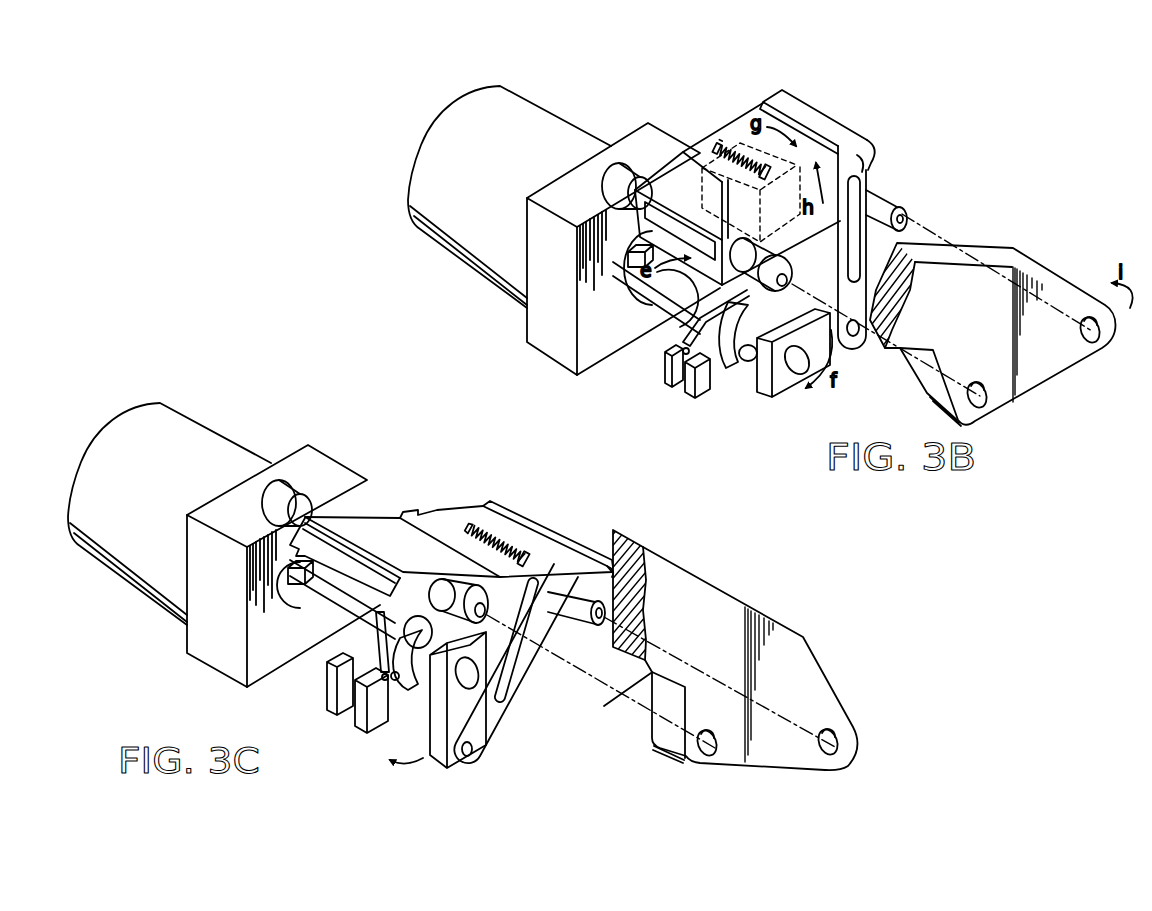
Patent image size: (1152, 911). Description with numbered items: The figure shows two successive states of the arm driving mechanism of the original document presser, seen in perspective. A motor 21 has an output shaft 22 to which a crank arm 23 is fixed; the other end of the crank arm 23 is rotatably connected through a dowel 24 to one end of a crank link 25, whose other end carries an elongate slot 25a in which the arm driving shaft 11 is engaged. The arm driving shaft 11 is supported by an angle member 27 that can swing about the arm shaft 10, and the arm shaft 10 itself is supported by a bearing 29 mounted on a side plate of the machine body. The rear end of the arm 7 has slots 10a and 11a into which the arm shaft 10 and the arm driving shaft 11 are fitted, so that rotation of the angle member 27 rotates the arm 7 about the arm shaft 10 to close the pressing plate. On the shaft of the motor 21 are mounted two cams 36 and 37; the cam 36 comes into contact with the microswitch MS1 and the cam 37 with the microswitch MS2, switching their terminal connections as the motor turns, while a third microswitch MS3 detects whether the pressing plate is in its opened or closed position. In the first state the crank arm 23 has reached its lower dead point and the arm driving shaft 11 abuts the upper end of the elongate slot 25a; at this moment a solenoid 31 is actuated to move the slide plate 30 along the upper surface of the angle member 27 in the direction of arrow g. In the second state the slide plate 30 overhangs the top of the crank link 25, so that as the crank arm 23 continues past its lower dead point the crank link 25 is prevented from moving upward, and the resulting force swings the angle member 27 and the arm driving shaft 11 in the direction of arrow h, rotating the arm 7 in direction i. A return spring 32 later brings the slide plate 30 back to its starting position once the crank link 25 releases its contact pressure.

In FIG. 3B, the arm 7 is at (1038, 373).
In FIG. 3C, the arm 7 is at (762, 758).
In FIG. 3B, the arm shaft 10 is at (767, 282).
In FIG. 3C, the arm shaft 10 is at (490, 613).
In FIG. 3B, the slot 10a is at (983, 398).
In FIG. 3C, the slot 10a is at (711, 757).
In FIG. 3B, the arm driving shaft 11 is at (888, 206).
In FIG. 3C, the arm driving shaft 11 is at (582, 618).
In FIG. 3B, the slot 11a is at (1098, 348).
In FIG. 3C, the slot 11a is at (831, 755).
In FIG. 3B, the motor 21 is at (544, 347).
In FIG. 3C, the motor 21 is at (214, 661).
In FIG. 3B, the output shaft 22 is at (657, 288).
In FIG. 3C, the output shaft 22 is at (327, 605).
In FIG. 3B, the crank arm 23 is at (780, 388).
In FIG. 3C, the crank arm 23 is at (438, 748).
In FIG. 3B, the dowel 24 is at (859, 334).
In FIG. 3B, the crank link 25 is at (862, 307).
In FIG. 3C, the crank link 25 is at (497, 718).
In FIG. 3B, the elongate slot 25a is at (852, 244).
In FIG. 3C, the elongate slot 25a is at (530, 652).
In FIG. 3B, the angle member 27 is at (872, 166).
In FIG. 3C, the angle member 27 is at (543, 563).
In FIG. 3B, the bearing 29 is at (603, 195).
In FIG. 3C, the bearing 29 is at (295, 489).
In FIG. 3B, the slide plate 30 is at (818, 143).
In FIG. 3C, the slide plate 30 is at (423, 518).
In FIG. 3B, the solenoid 31 is at (706, 192).
In FIG. 3B, the return spring 32 is at (739, 134).
In FIG. 3C, the return spring 32 is at (510, 537).
In FIG. 3B, the cam 36 is at (738, 360).
In FIG. 3C, the cam 36 is at (405, 688).
In FIG. 3B, the cam 37 is at (703, 318).
In FIG. 3C, the cam 37 is at (376, 618).
In FIG. 3B, the microswitch MS1 is at (692, 400).
In FIG. 3C, the microswitch MS1 is at (362, 724).
In FIG. 3B, the microswitch MS2 is at (663, 369).
In FIG. 3C, the microswitch MS2 is at (327, 703).
In FIG. 3B, the microswitch MS3 is at (630, 258).
In FIG. 3C, the microswitch MS3 is at (287, 572).